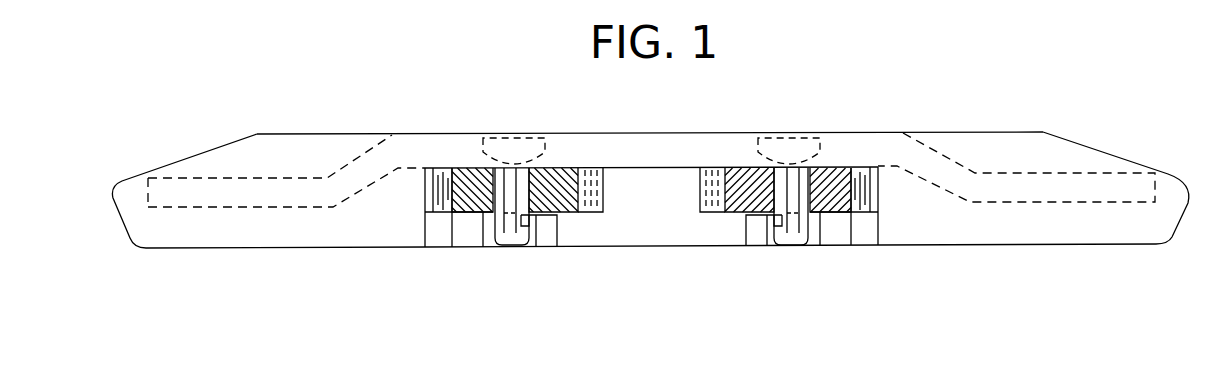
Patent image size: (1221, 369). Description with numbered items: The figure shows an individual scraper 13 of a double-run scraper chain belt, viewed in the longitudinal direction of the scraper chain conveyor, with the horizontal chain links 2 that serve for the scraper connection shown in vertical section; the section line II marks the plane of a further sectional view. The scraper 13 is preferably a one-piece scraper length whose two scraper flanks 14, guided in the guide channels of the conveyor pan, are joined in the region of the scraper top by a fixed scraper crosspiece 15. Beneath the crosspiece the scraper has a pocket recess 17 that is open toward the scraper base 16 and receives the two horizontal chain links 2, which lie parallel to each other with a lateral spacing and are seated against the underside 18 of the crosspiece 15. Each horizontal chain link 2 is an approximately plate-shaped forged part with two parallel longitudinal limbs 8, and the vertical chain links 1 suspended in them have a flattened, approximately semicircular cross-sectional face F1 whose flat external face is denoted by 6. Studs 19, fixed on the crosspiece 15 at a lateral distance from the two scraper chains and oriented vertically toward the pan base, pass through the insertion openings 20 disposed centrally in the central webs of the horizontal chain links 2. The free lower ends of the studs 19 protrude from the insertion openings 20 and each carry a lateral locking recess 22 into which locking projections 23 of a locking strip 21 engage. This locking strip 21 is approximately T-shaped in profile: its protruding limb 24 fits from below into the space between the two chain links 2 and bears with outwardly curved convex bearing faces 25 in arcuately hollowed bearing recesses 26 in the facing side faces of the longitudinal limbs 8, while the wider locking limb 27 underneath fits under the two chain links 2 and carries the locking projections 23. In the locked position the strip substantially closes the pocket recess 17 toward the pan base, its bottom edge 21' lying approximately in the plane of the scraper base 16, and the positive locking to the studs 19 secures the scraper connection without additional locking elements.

The vertical chain link 1 is at (488, 253).
The horizontal chain link 2 is at (457, 167).
The flattened external face 6 is at (505, 136).
The longitudinal limb 8 is at (730, 167).
The scraper 13 is at (987, 132).
The scraper flank 14 is at (213, 150).
The scraper crosspiece 15 is at (642, 142).
The scraper base 16 is at (254, 250).
The pocket recess 17 is at (838, 233).
The underside of scraper crosspiece 18 is at (640, 170).
The stud 19 is at (518, 192).
The insertion opening 20 is at (492, 193).
The locking strip 21 is at (651, 278).
The bottom edge of locking strip 21' is at (670, 281).
The locking recess 22 is at (521, 218).
The locking projection 23 is at (543, 227).
The protruding limb 24 is at (666, 209).
The convex bearing face 25 is at (595, 189).
The bearing recess 26 is at (577, 190).
The locking limb 27 is at (597, 241).
The cross-sectional face F1 is at (521, 144).
The section line II- II is at (252, 299).